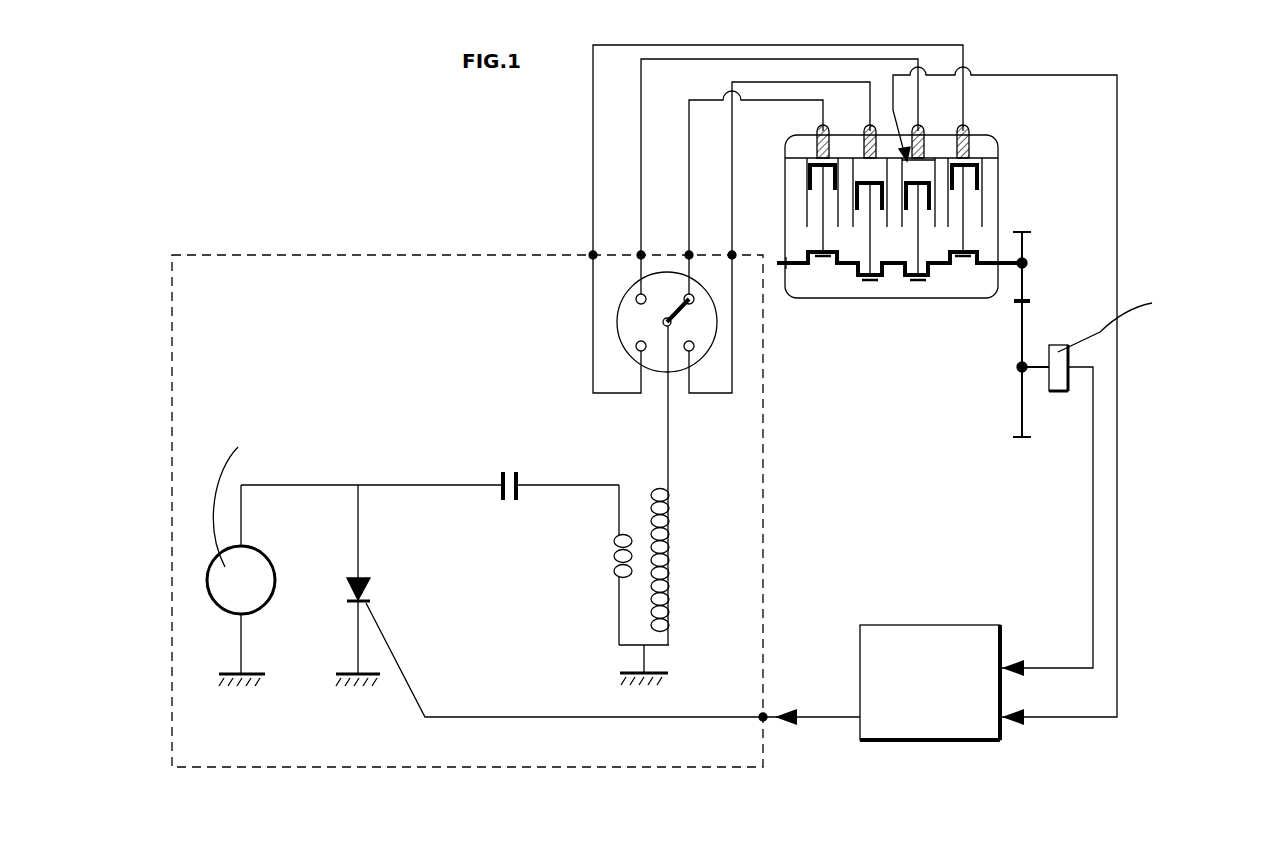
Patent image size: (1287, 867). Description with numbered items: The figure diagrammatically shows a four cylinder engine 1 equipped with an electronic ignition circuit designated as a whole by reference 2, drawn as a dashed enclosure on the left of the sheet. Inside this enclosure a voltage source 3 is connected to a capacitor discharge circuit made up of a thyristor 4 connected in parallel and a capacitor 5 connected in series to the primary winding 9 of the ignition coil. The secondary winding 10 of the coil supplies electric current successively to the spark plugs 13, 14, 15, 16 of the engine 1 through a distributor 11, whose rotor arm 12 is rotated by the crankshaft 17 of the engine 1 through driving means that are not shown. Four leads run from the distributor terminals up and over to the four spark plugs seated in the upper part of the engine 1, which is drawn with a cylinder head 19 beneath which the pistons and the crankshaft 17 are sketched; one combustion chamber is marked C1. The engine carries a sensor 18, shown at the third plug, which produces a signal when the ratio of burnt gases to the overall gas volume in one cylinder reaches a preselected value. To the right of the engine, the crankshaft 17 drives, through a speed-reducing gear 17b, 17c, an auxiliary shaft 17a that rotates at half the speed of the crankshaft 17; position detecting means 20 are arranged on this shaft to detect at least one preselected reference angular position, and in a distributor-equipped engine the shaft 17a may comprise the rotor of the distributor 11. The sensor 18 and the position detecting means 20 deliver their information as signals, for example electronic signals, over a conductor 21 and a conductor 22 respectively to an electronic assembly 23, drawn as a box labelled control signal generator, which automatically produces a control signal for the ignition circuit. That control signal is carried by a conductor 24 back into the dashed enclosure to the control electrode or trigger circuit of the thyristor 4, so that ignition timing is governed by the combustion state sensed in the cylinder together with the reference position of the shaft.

The engine 1 is at (1000, 180).
The electronic ignition circuit 2 is at (276, 253).
The voltage source 3 is at (267, 556).
The thyristor 4 is at (376, 597).
The capacitor 5 is at (507, 504).
The primary winding 9 is at (603, 563).
The secondary winding 10 is at (676, 566).
The distributor 11 is at (679, 373).
The rotor arm 12 is at (664, 316).
The spark plug 13 is at (817, 133).
The spark plug 14 is at (865, 130).
The spark plug 15 is at (924, 130).
The spark plug 16 is at (969, 130).
The crankshaft 17 is at (810, 266).
The auxiliary shaft 17a is at (1017, 368).
The speed-reducing gear 17b is at (1026, 281).
The speed-reducing gear 17c is at (1024, 327).
The sensor 18 is at (906, 148).
The cylinder head 19 is at (994, 148).
The position detecting means 20 is at (1060, 394).
The conductor 21 is at (1120, 357).
The conductor 22 is at (1090, 455).
The electronic assembly 23 is at (926, 623).
The conductor 24 is at (808, 720).
The combustion chamber C1 is at (922, 170).